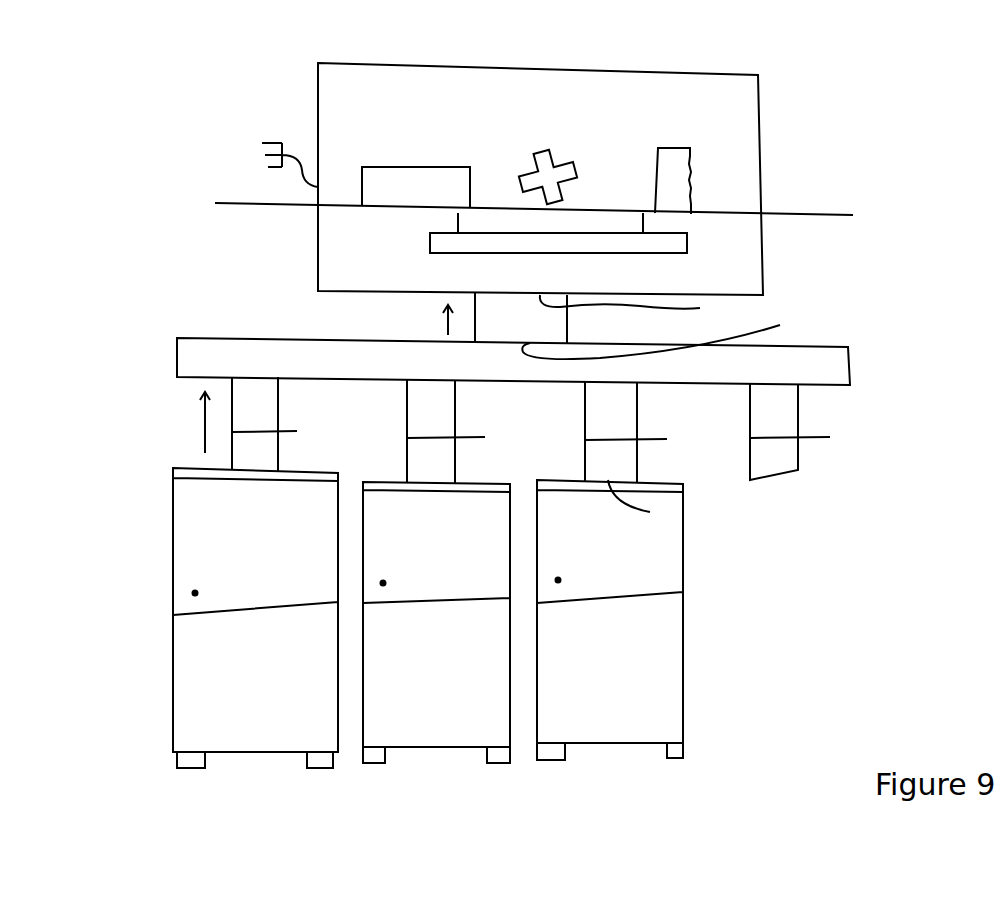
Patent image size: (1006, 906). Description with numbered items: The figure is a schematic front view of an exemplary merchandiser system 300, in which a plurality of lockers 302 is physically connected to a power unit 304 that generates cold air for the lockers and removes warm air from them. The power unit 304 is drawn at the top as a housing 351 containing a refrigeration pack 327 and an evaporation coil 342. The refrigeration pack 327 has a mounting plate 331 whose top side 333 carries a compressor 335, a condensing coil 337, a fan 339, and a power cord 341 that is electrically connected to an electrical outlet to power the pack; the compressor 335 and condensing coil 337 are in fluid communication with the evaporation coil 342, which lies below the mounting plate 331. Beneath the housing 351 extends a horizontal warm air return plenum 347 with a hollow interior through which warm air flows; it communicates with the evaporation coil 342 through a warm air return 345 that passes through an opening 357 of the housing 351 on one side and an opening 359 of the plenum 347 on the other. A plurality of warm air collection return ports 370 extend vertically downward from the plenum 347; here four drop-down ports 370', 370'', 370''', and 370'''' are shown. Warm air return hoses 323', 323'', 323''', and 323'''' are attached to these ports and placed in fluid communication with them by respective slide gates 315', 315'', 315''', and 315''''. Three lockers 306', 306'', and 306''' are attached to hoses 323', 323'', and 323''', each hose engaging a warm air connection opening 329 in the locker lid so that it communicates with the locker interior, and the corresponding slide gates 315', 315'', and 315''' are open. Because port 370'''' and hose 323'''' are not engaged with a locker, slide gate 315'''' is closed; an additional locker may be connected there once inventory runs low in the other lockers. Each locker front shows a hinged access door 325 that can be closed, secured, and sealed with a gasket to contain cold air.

The merchandiser system 300 is at (879, 118).
The plurality of lockers 302 is at (132, 557).
The power unit 304 is at (158, 111).
The locker 306' is at (255, 641).
The locker 306'' is at (436, 643).
The locker 306''' is at (653, 642).
The slide gate 315' is at (316, 424).
The slide gate 315'' is at (488, 425).
The slide gate 315''' is at (667, 433).
The slide gate 315'''' is at (843, 432).
The warm air return hose 323' is at (297, 451).
The warm air return hose 323'' is at (474, 460).
The warm air return hose 323''' is at (660, 461).
The warm air return hose 323'''' is at (830, 464).
The hinged access door 325 is at (667, 567).
The refrigeration pack 327 is at (779, 169).
The warm air connection opening 329 is at (650, 512).
The mounting plate 331 is at (872, 204).
The top side 333 is at (227, 203).
The compressor 335 is at (415, 175).
The condensing coil 337 is at (670, 133).
The fan 339 is at (568, 143).
The power cord 341 is at (260, 124).
The evaporation coil 342 is at (703, 243).
The warm air return 345 is at (577, 324).
The warm air return plenum 347 is at (864, 358).
The housing 351 is at (768, 105).
The opening 357 is at (647, 313).
The opening 359 is at (675, 333).
The plurality of warm air collection return ports 370 is at (125, 421).
The warm air collection port 370' is at (294, 404).
The warm air collection port 370'' is at (471, 409).
The warm air collection port 370''' is at (652, 411).
The warm air collection port 370'''' is at (824, 411).